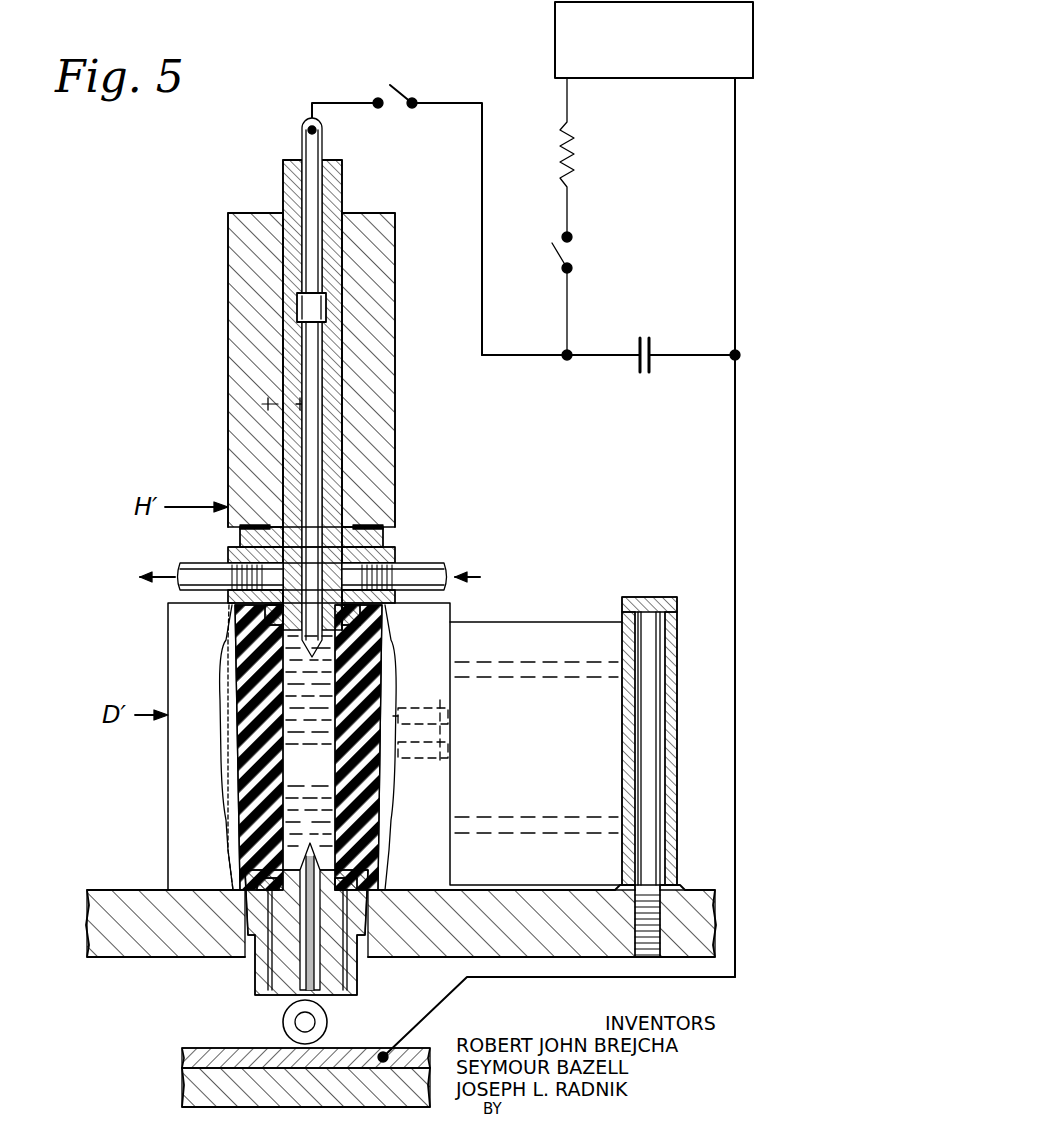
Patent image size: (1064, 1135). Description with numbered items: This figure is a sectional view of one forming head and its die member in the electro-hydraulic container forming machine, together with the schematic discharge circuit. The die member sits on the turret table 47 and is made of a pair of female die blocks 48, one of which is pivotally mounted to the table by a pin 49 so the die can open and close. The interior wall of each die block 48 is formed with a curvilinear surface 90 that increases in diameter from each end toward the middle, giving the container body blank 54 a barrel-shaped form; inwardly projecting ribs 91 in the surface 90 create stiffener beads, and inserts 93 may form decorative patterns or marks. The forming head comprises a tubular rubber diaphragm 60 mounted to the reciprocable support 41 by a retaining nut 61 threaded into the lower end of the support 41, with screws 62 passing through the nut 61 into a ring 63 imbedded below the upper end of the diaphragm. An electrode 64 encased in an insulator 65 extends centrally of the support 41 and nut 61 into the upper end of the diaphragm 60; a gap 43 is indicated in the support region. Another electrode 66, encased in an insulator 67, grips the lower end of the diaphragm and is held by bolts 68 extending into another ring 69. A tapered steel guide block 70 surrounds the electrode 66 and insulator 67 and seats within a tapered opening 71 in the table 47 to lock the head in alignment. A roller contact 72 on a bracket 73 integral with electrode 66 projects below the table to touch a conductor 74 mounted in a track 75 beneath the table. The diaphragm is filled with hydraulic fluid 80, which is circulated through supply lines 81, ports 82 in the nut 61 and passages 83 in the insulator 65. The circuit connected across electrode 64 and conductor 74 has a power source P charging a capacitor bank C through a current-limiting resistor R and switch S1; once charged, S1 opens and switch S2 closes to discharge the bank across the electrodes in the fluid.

The reciprocable support 41 is at (228, 262).
The gap / spacing in block 43 is at (278, 380).
The table 47 is at (97, 930).
The female die block 48 is at (180, 756).
The pin 49 is at (652, 634).
The container body blank 54 is at (388, 698).
The tubular rubber diaphragm 60 is at (370, 818).
The retaining nut 61 is at (395, 556).
The screws 62 is at (232, 553).
The ring 63 is at (386, 622).
The electrode 64 is at (312, 490).
The insulator 65 is at (335, 465).
The electrode 66 is at (296, 996).
The insulator 67 is at (262, 958).
The bolts 68 is at (360, 968).
The ring 69 is at (378, 876).
The tapered steel guide block 70 is at (250, 918).
The tapered opening 71 is at (383, 938).
The roller contact 72 is at (328, 1030).
The bracket 73 is at (290, 1000).
The conductor 74 is at (230, 1057).
The track 75 is at (192, 1088).
The hydraulic fluid 80 is at (326, 777).
The supply lines 81 is at (420, 578).
The ports 82 is at (350, 572).
The passages 83 is at (400, 597).
The curvilinear surface 90 is at (224, 775).
The inwardly projecting ribs 91 is at (228, 678).
The inserts 93 is at (452, 748).
The power source P is at (645, 70).
The resistor R is at (580, 153).
The switch S1 is at (574, 250).
The switch S2 is at (397, 207).
The capacitor bank C is at (665, 300).